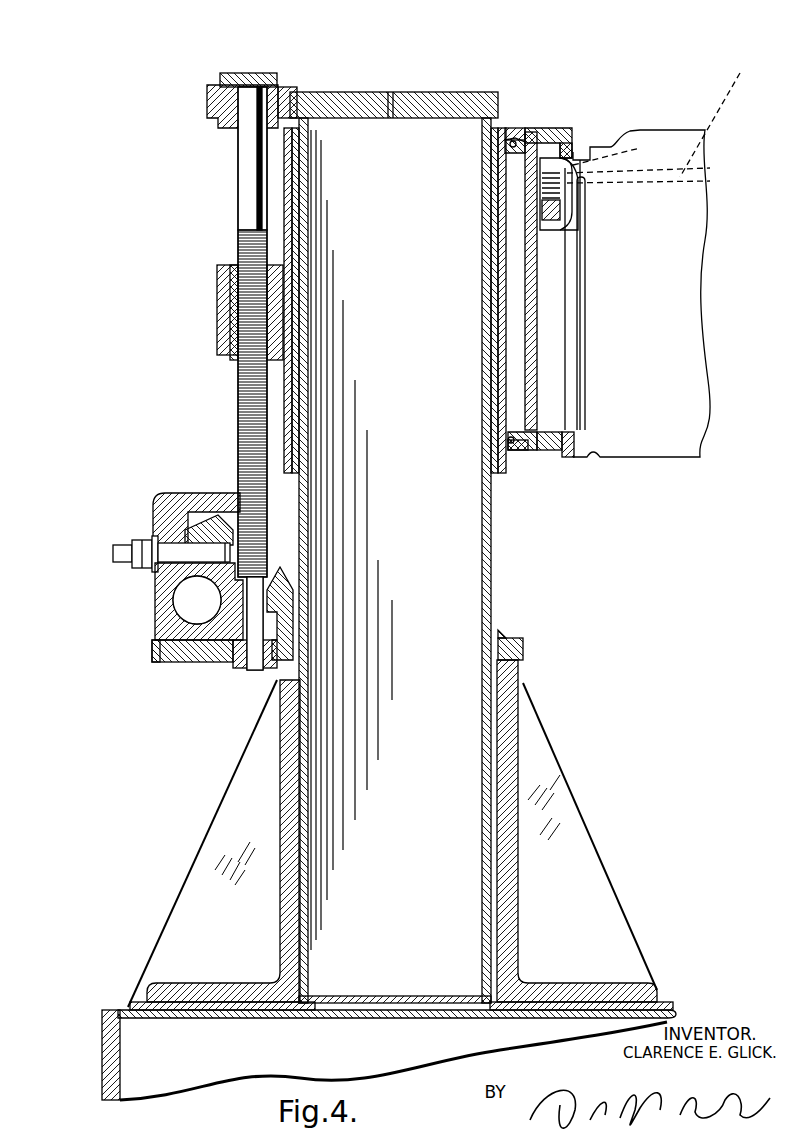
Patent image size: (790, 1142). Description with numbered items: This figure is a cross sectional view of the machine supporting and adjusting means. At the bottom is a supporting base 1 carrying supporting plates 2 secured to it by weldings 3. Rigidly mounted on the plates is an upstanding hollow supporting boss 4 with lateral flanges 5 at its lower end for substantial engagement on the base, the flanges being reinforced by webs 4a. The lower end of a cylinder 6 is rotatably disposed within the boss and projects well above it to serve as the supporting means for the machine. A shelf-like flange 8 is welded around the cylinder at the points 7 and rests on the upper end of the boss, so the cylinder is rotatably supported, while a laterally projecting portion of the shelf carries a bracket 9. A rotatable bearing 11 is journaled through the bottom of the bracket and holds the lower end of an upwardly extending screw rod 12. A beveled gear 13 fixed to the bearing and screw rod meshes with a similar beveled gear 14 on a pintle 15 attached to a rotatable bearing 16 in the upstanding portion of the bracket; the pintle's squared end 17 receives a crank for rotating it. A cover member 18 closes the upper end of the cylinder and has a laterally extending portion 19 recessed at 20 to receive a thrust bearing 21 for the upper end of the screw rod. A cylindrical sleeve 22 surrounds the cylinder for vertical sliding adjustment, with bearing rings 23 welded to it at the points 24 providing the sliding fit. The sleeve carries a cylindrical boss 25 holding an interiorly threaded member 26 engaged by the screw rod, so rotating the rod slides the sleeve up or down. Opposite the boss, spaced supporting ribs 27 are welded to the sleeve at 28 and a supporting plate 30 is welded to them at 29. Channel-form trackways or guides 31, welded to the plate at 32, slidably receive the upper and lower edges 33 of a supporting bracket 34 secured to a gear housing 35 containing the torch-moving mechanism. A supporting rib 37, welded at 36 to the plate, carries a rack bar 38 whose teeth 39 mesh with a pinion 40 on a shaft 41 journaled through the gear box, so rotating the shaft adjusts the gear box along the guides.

The supporting base 1 is at (107, 1042).
The supporting plates 2 is at (258, 1012).
The weldings 3 is at (128, 1005).
The supporting boss 4 is at (507, 827).
The webs 4a is at (638, 744).
The lateral flanges 5 is at (560, 987).
The cylinder 6 is at (493, 550).
The welding points 7 is at (495, 637).
The shelf-like flange 8 is at (240, 640).
The bracket 9 is at (152, 650).
The rotatable bearing 11 is at (223, 660).
The screw rod 12 is at (250, 412).
The beveled gear 13 is at (197, 660).
The beveled gear 14 is at (165, 617).
The pintle 15 is at (167, 605).
The rotatable bearing 16 is at (152, 515).
The squared end 17 is at (118, 552).
The cover member 18 is at (430, 90).
The laterally extending portion 19 is at (207, 112).
The recess 20 is at (207, 100).
The thrust bearing 21 is at (288, 90).
The cylindrical sleeve 22 is at (283, 165).
The bearing rings 23 is at (297, 192).
The welding points 24 is at (283, 135).
The cylindrical boss 25 is at (220, 270).
The interiorly threaded member 26 is at (232, 297).
The supporting ribs 27 is at (515, 143).
The welds 28 is at (527, 147).
The welding 29 is at (513, 147).
The supporting plate 30 is at (537, 305).
The trackways or guides 31 is at (553, 138).
The welding 32 is at (532, 160).
The upper and lower edges 33 is at (570, 148).
The supporting bracket 34 is at (570, 270).
The gear housing 35 is at (672, 142).
The welding 36 is at (537, 192).
The supporting rib 37 is at (557, 208).
The rack bar 38 is at (548, 203).
The teeth 39 is at (540, 197).
The pinion 40 is at (638, 159).
The shaft 41 is at (723, 112).